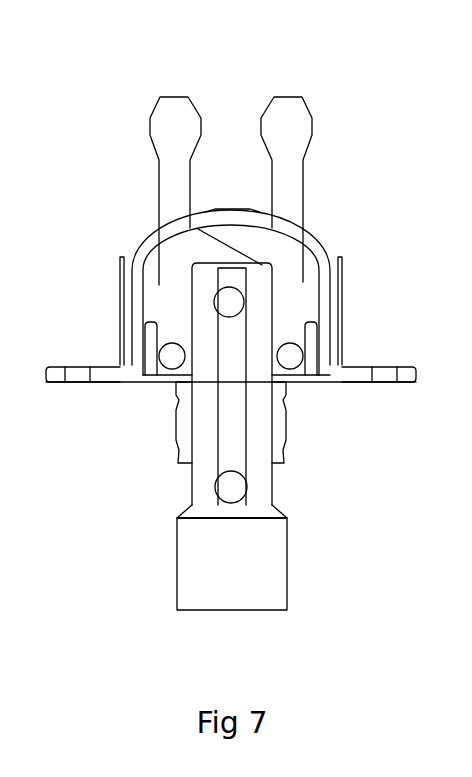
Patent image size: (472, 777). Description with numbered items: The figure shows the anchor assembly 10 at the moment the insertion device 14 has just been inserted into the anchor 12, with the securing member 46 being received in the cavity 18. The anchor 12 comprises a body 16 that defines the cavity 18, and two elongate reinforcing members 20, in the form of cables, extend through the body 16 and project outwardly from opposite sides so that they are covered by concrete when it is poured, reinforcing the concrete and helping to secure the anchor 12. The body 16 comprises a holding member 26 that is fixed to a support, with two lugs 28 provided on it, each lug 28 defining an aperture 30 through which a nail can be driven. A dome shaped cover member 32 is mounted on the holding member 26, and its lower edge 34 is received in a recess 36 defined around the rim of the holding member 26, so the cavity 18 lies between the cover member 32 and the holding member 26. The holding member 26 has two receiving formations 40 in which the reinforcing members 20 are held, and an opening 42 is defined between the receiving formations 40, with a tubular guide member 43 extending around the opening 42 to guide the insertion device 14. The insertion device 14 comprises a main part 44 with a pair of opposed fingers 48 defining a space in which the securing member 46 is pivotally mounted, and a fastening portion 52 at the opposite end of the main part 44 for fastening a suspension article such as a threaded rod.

The anchor assembly 10 is at (150, 427).
The anchor 12 is at (315, 226).
The insertion device 14 is at (305, 557).
The body 16 is at (139, 230).
The cavity 18 is at (298, 302).
The elongate reinforcing members 20 is at (287, 120).
The holding member 26 is at (334, 273).
The lugs 28 is at (58, 369).
The aperture 30 is at (80, 372).
The cover member 32 is at (232, 212).
The lower edge 34 is at (137, 357).
The recess 36 is at (326, 368).
The receiving formations 40 is at (175, 373).
The opening 42 is at (190, 377).
The tubular guide member 43 is at (278, 400).
The main part 44 is at (257, 452).
The securing member 46 is at (205, 252).
The fingers 48 is at (260, 277).
The fastening portion 52 is at (218, 578).